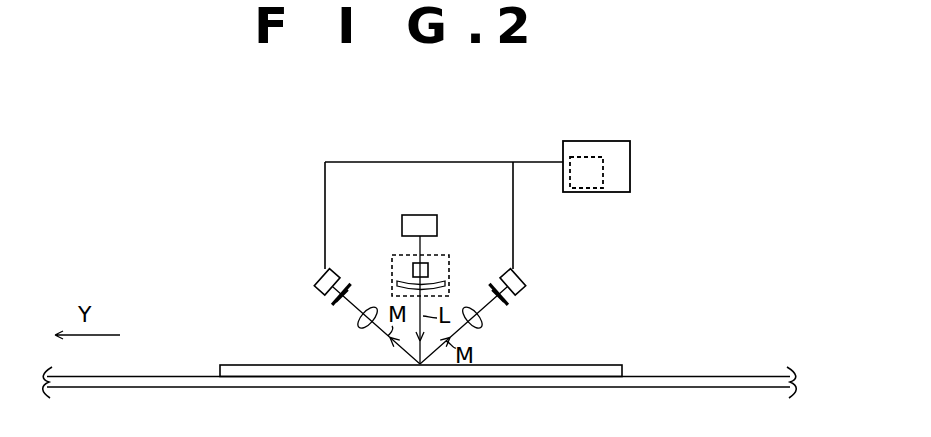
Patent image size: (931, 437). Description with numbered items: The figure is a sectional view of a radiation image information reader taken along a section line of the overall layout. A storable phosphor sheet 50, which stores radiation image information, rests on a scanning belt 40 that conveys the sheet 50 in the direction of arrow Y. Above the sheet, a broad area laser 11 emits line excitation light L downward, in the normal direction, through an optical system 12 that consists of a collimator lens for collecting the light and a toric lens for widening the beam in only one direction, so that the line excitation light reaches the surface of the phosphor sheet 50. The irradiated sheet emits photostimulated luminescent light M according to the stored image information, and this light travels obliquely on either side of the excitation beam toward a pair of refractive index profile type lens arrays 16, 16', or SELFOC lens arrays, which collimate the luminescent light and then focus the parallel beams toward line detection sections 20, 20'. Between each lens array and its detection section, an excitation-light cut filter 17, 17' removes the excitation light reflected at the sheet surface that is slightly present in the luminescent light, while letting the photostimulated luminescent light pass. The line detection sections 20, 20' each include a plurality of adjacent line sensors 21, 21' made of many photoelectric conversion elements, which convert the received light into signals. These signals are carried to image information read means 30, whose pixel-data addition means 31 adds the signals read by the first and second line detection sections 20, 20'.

The broad area laser 11 is at (420, 215).
The optical system 12 is at (449, 256).
The refractive index profile type lens array 16 is at (496, 331).
The refractive index profile type lens array 16' is at (349, 331).
The excitation-light cut filter 17 is at (530, 311).
The excitation-light cut filter 17' is at (315, 311).
The line detection section 20 is at (532, 264).
The line detection section 20' is at (304, 264).
The line sensor 21 is at (542, 291).
The line sensor 21' is at (298, 291).
The image information read means 30 is at (630, 168).
The pixel-data addition means 31 is at (580, 188).
The scanning belt 40 is at (700, 376).
The storable phosphor sheet 50 is at (243, 365).